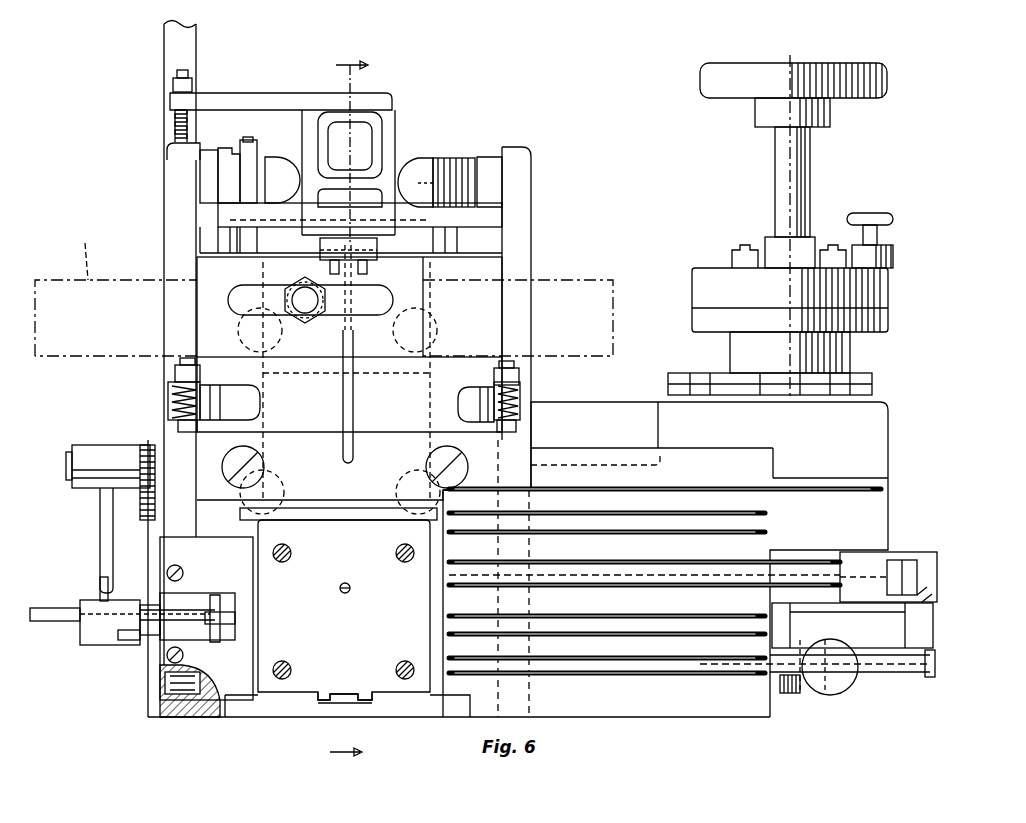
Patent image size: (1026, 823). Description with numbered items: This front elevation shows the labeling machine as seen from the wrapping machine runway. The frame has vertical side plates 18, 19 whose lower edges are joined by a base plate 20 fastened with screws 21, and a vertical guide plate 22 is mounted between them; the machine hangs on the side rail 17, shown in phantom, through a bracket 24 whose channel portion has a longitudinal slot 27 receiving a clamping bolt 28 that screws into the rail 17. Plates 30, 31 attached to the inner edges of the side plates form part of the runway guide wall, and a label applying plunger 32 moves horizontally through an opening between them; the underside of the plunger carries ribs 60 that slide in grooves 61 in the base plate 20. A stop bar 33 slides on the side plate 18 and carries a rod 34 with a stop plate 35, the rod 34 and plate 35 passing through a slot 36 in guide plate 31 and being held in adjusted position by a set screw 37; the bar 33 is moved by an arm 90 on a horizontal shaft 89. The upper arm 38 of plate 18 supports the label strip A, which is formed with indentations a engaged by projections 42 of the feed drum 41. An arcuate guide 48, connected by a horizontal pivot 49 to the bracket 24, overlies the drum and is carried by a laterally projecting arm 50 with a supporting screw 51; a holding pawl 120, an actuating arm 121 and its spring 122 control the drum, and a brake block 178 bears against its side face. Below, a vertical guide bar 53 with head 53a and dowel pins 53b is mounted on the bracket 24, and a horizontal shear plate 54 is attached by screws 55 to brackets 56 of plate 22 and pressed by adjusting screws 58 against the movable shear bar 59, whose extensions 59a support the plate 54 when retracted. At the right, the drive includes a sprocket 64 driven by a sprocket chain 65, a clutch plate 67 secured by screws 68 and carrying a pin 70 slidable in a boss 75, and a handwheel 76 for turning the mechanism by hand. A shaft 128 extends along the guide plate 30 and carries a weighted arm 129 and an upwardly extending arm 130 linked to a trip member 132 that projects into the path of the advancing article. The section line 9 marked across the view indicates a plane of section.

The side rail 17 is at (324, 292).
The side plate 18 is at (165, 190).
The side plate 19 is at (530, 202).
The base plate 20 is at (220, 718).
The screws 21 is at (160, 692).
The vertical guide plate 22 is at (433, 388).
The bracket 24 is at (420, 292).
The longitudinal slot 27 is at (361, 306).
The clamping bolt 28 is at (314, 316).
The guide plate 30 is at (768, 454).
The guide plate 31 is at (208, 544).
The label applying plunger 32 is at (370, 640).
The stop bar 33 is at (132, 642).
The rod 34 is at (50, 608).
The stop plate 35 is at (221, 603).
The slot 36 is at (202, 594).
The set screw 37 is at (100, 577).
The arm 38 is at (165, 45).
The feed drum 41 is at (400, 158).
The projections 42 is at (277, 158).
The arcuate guide 48 is at (395, 114).
The horizontal pivot 49 is at (306, 220).
The laterally projecting arm 50 is at (289, 94).
The supporting screw 51 is at (172, 112).
The vertical guide bar 53 is at (353, 402).
The head 53a is at (324, 258).
The dowel pins 53b is at (367, 262).
The shear plate 54 is at (312, 434).
The screws 55 is at (266, 464).
The brackets 56 is at (168, 400).
The adjusting screws 58 is at (173, 368).
The shear bar 59 is at (329, 516).
The extensions 59a is at (270, 526).
The ribs 60 is at (346, 688).
The grooves 61 is at (342, 718).
The sprocket 64 is at (850, 350).
The sprocket chain 65 is at (872, 383).
The clutch plate 67 is at (692, 268).
The screws 68 is at (734, 246).
The pin 70 is at (876, 228).
The boss 75 is at (894, 258).
The handwheel 76 is at (722, 63).
The horizontal shaft 89 is at (68, 454).
The arm 90 is at (100, 514).
The holding pawl 120 is at (222, 180).
The actuating arm 121 is at (254, 144).
The spring 122 is at (233, 150).
The shaft 128 is at (930, 676).
The weighted arm 129 is at (834, 689).
The upwardly extending arm 130 is at (918, 628).
The trip member 132 is at (938, 580).
The brake block 178 is at (464, 160).
The section line 9 is at (349, 411).
The label strip A is at (406, 244).
The indentations a is at (339, 411).